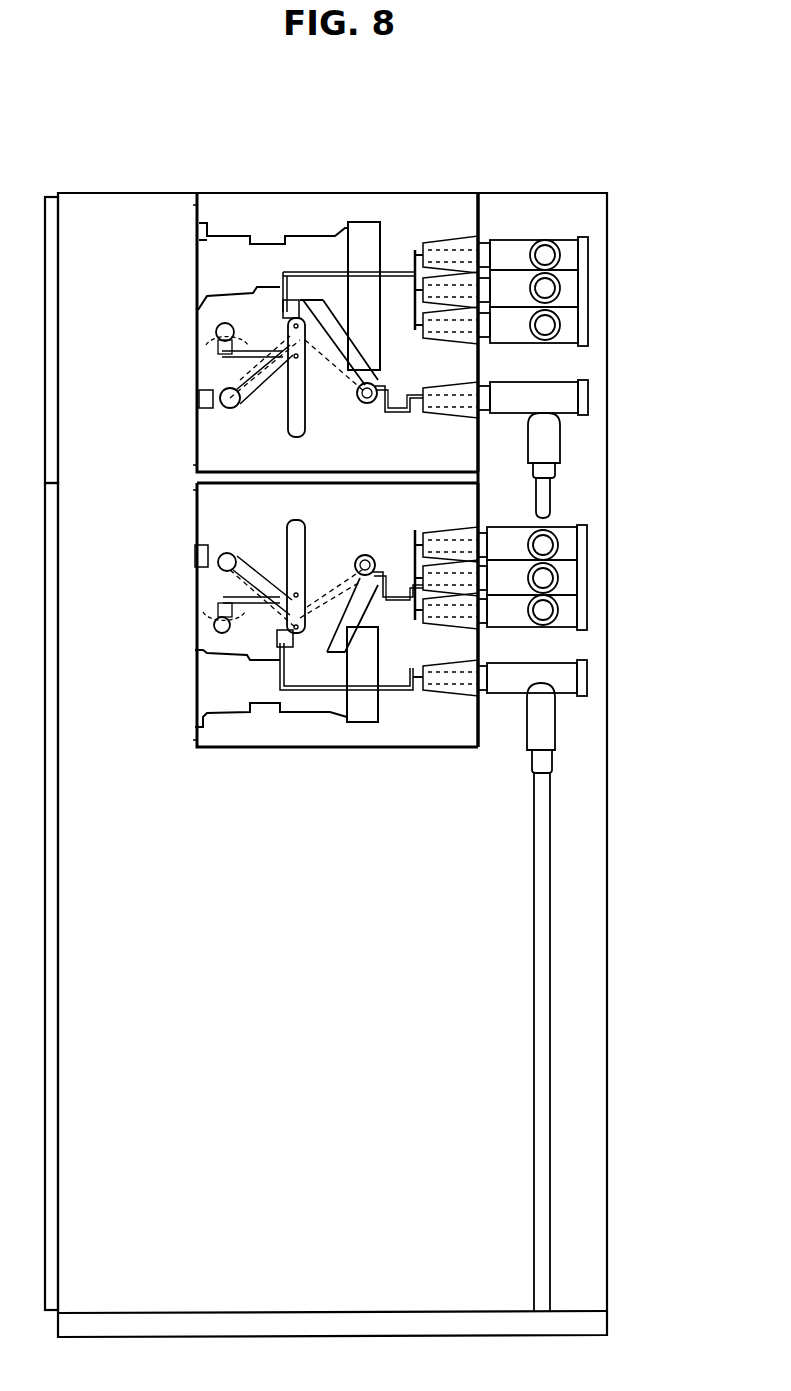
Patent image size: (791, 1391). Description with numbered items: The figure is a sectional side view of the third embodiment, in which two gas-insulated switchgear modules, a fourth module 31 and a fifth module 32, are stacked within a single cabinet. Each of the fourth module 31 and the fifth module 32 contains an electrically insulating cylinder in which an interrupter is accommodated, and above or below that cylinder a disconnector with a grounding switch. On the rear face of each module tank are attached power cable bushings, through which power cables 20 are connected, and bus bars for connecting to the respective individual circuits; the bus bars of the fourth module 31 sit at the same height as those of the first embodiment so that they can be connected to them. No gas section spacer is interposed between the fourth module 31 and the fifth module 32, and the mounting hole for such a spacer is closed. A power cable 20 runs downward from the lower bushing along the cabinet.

The power cable 20 is at (553, 860).
The fourth module 31 is at (480, 650).
The fifth module 32 is at (480, 363).